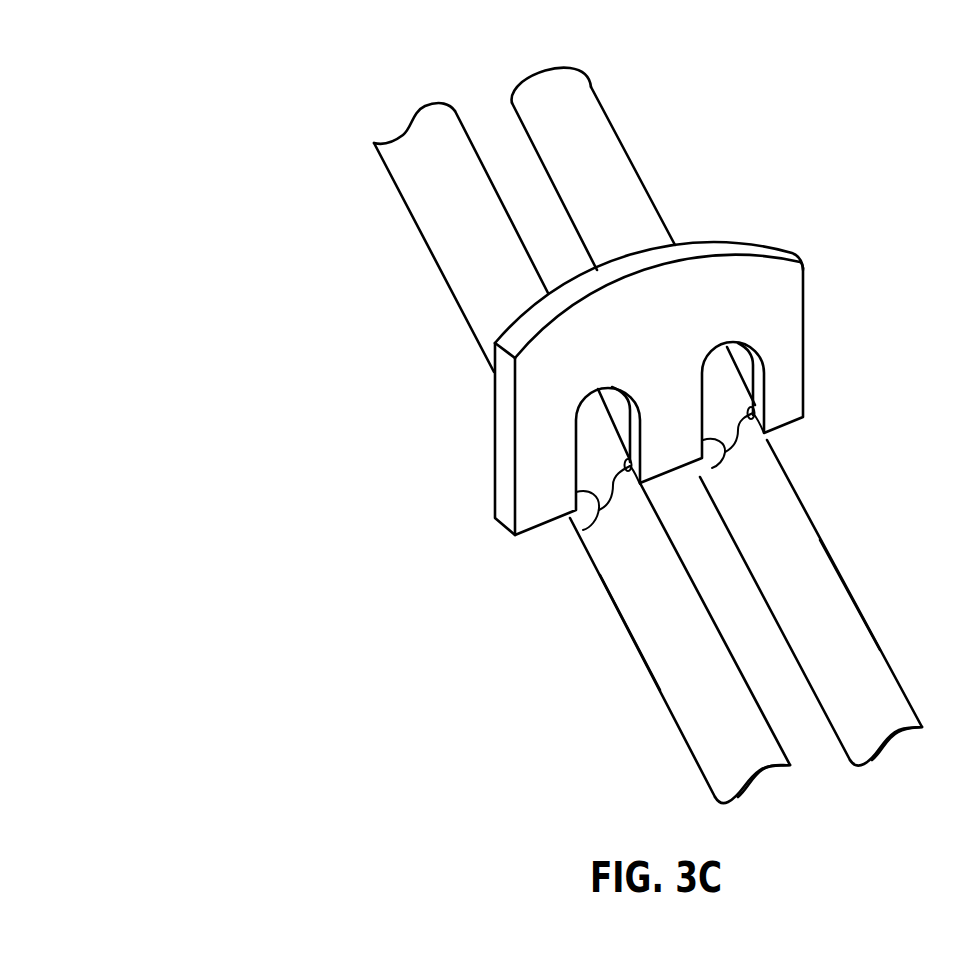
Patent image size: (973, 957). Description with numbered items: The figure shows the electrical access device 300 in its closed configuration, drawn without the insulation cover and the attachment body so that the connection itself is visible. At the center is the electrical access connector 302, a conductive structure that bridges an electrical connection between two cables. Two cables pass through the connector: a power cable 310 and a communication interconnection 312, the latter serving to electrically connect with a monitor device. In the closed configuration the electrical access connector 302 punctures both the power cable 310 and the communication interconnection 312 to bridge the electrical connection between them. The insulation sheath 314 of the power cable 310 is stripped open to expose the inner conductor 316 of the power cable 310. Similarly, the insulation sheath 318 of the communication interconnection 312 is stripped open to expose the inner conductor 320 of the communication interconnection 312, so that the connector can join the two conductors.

The electrical access device 300 is at (103, 70).
The electrical access connector 302 is at (781, 283).
The power cable 310 is at (694, 707).
The communication interconnection 312 is at (858, 662).
The insulation sheath 314 is at (628, 630).
The inner conductor 316 is at (580, 530).
The insulation sheath 318 is at (863, 607).
The inner conductor 320 is at (714, 452).